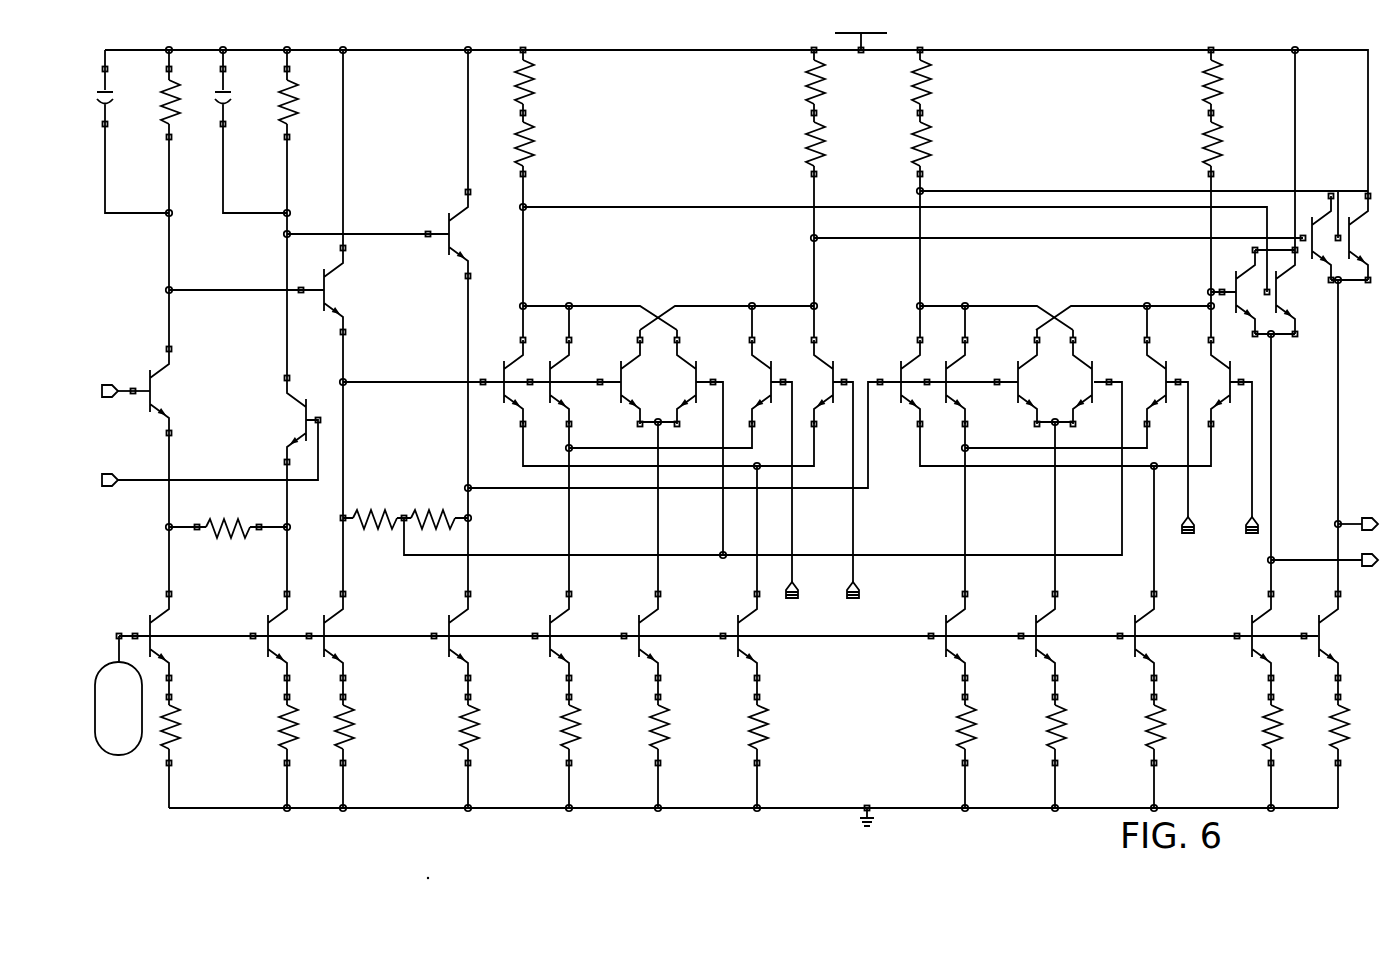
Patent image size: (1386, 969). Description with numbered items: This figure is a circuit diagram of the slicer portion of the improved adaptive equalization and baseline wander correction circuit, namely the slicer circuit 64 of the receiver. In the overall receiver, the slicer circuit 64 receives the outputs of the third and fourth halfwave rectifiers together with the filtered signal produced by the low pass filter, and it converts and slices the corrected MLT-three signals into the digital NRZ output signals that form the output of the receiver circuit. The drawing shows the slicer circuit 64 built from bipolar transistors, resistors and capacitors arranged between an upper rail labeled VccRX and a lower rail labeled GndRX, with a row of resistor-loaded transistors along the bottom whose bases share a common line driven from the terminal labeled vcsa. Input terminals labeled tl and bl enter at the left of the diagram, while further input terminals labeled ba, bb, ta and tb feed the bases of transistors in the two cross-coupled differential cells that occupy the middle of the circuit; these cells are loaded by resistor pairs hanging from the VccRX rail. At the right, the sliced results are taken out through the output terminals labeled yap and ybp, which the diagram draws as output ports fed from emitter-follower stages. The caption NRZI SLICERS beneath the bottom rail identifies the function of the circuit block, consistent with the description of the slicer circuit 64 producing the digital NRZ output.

The slicer circuit 64 is at (622, 167).
The positive supply terminal VccRX is at (861, 26).
The ground terminal GndRX is at (879, 833).
The tl input terminal tl is at (126, 405).
The bl input terminal bl is at (211, 452).
The ba input terminal ba is at (790, 505).
The bb input terminal bb is at (849, 505).
The ta input terminal ta is at (1186, 473).
The tb input terminal tb is at (1244, 473).
The yap output terminal yap is at (1356, 508).
The ybp output terminal ybp is at (1323, 575).
The current source bias voltage vcsa is at (118, 695).